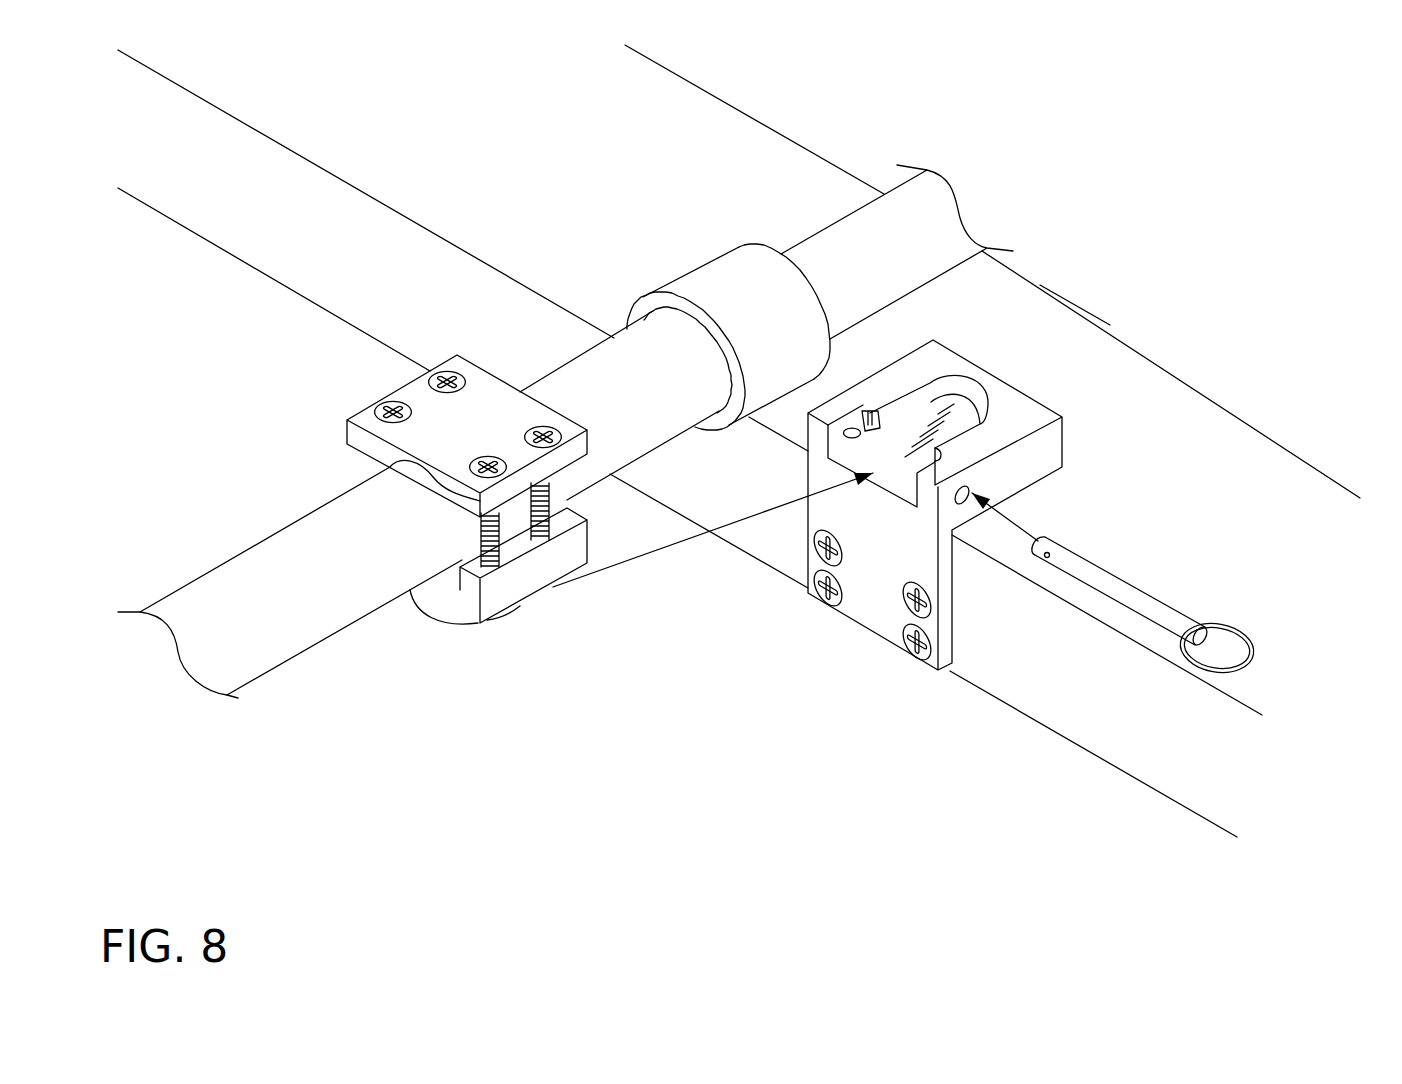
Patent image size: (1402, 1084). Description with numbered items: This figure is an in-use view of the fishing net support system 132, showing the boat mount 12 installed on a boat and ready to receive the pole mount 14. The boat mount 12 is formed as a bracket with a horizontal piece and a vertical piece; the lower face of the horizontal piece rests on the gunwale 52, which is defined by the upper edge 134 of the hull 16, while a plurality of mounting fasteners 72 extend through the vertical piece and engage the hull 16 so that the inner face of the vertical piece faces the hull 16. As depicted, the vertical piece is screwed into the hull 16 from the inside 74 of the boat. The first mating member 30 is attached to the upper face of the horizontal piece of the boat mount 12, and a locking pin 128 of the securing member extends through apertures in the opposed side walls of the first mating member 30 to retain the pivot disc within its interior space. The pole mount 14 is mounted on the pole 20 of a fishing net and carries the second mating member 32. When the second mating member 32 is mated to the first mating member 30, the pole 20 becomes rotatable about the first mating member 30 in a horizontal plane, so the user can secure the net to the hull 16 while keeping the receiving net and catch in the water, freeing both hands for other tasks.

The boat mount 12 is at (905, 482).
The pole mount 14 is at (367, 402).
The hull 16 is at (1157, 742).
The pole 20 is at (868, 238).
The first mating member 30 is at (1010, 400).
The second mating member 32 is at (460, 627).
The gunwale 52 is at (1250, 513).
The mounting fasteners 72 is at (817, 573).
The inside 74 is at (1073, 777).
The locking pin 128 is at (1085, 560).
The fishing net support system 132 is at (586, 368).
The upper edge 134 is at (1073, 331).